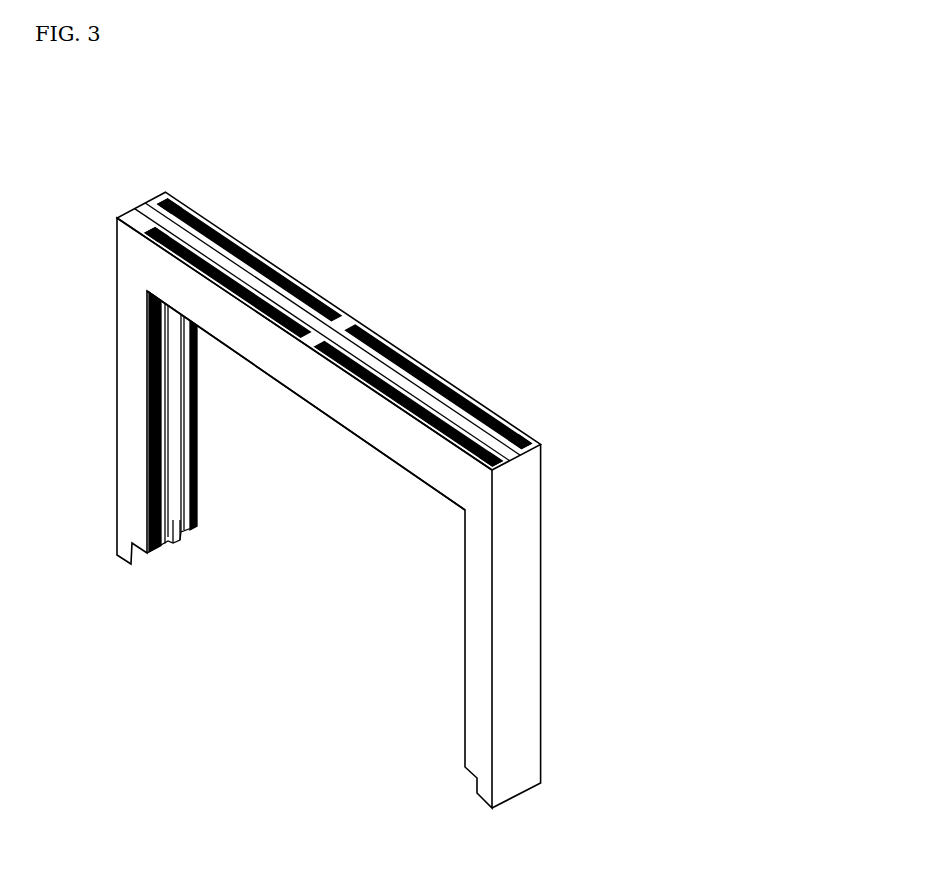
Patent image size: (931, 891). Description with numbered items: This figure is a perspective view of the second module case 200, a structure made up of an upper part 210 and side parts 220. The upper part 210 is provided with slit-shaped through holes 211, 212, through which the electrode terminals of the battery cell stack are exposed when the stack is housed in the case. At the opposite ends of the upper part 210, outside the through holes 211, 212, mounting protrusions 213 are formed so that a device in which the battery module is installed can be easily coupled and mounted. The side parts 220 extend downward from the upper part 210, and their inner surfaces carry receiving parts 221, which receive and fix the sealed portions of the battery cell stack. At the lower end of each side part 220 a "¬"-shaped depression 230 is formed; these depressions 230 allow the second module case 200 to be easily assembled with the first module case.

The second module case 200 is at (92, 156).
The upper part 210 is at (360, 319).
The slit-shaped through hole 211 is at (217, 266).
The slit-shaped through hole 212 is at (430, 420).
The mounting protrusion 213 is at (168, 222).
The side part 220 is at (329, 525).
The receiving part 221 is at (184, 420).
The depression 230 is at (146, 572).